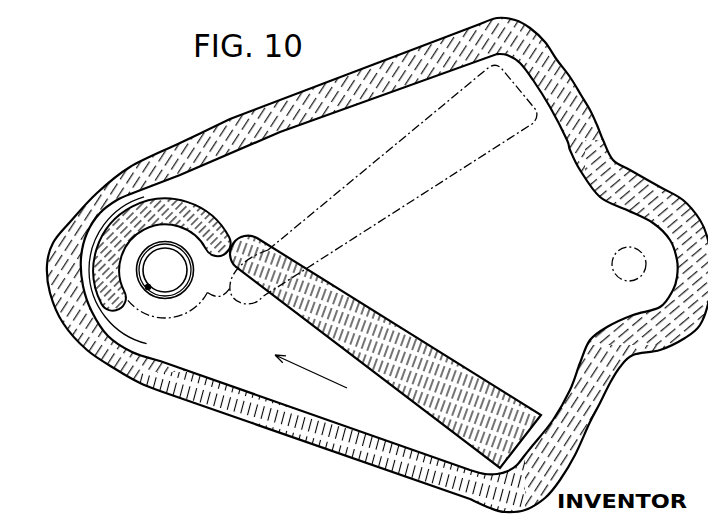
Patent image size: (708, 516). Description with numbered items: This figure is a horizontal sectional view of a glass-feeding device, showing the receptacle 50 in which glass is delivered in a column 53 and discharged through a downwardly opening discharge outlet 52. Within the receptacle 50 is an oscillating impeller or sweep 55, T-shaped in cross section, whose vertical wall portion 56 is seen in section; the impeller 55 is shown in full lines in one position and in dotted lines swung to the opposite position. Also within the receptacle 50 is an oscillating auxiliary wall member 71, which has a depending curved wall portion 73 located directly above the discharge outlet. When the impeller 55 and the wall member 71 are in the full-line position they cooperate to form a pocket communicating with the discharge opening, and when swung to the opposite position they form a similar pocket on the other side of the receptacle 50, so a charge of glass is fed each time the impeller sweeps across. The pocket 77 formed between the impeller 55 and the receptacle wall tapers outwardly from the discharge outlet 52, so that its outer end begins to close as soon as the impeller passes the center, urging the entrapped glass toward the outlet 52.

The receptacle 50 is at (591, 133).
The discharge outlet 52 is at (148, 288).
The column 53 is at (612, 264).
The oscillating impeller or sweep 55 is at (352, 297).
The vertical wall portion 56 is at (429, 189).
The oscillating auxiliary wall member 71 is at (100, 271).
The depending curved wall portion 73 is at (120, 243).
The pocket 77 is at (290, 359).